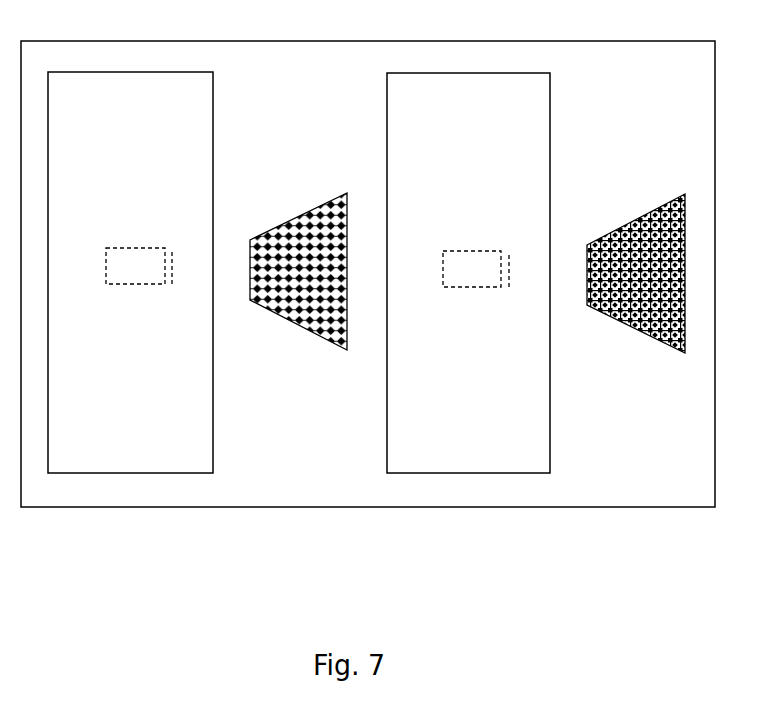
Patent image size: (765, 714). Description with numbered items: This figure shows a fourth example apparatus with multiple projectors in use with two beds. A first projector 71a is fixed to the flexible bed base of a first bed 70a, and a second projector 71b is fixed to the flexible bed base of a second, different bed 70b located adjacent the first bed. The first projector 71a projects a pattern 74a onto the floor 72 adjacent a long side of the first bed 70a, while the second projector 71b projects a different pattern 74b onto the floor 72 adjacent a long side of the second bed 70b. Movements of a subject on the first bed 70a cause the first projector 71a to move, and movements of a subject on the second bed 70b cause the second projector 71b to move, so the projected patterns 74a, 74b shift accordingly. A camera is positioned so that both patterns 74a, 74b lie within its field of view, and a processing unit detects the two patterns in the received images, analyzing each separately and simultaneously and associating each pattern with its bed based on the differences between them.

The floor 72 is at (310, 130).
The first bed 70a is at (125, 183).
The second bed 70b is at (461, 185).
The first projector 71a is at (121, 268).
The second projector 71b is at (458, 271).
The pattern 74a is at (302, 297).
The different pattern 74b is at (620, 323).